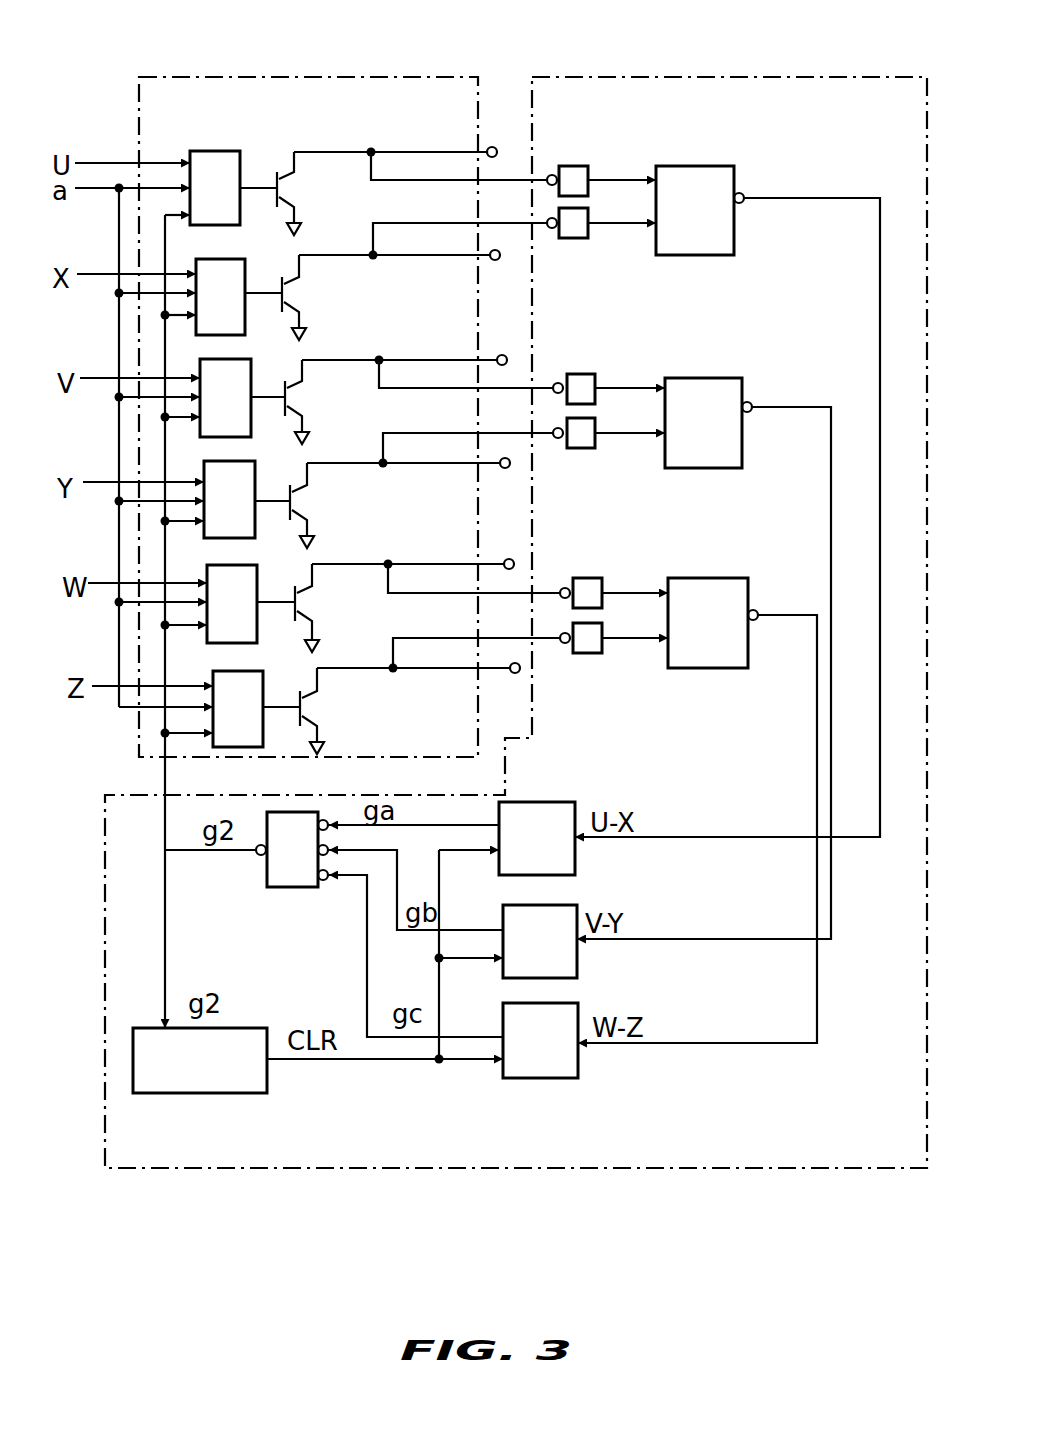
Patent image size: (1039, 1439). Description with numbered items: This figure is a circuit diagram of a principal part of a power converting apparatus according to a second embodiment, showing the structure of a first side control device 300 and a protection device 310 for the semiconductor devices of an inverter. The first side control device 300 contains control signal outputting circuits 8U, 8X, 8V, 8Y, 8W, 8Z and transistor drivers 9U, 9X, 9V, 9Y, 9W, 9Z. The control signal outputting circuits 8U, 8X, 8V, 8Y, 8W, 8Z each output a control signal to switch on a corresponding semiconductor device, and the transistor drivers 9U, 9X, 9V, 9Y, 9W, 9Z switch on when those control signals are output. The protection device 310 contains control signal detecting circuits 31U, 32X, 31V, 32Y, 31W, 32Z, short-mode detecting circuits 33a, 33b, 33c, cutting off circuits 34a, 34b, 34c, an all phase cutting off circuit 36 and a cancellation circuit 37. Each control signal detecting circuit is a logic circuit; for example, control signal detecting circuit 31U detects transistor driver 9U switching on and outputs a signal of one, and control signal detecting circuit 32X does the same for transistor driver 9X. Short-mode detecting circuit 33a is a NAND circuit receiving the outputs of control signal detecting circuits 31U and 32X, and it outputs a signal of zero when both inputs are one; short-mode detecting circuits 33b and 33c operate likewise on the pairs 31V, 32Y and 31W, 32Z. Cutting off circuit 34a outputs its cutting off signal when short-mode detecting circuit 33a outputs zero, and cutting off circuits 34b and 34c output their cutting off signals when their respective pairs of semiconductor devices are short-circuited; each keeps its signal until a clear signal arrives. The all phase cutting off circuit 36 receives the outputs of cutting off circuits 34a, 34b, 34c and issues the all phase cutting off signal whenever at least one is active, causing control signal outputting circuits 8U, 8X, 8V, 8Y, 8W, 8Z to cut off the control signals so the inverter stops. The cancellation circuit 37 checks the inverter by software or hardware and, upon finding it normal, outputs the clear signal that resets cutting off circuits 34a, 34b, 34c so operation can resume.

The first side control device 300 is at (334, 76).
The protection device 310 is at (764, 76).
The control signal outputting circuit 8U is at (233, 118).
The control signal outputting circuit 8X is at (245, 240).
The control signal outputting circuit 8V is at (228, 359).
The control signal outputting circuit 8Y is at (237, 461).
The control signal outputting circuit 8W is at (237, 565).
The control signal outputting circuit 8Z is at (230, 671).
The transistor driver 9U is at (290, 190).
The transistor driver 9X is at (300, 298).
The transistor driver 9V is at (300, 402).
The transistor driver 9Y is at (305, 506).
The transistor driver 9W is at (310, 607).
The transistor driver 9Z is at (315, 712).
The control signal detecting circuit 31U is at (567, 166).
The control signal detecting circuit 32X is at (572, 238).
The control signal detecting circuit 31V is at (577, 374).
The control signal detecting circuit 32Y is at (575, 448).
The control signal detecting circuit 31W is at (582, 578).
The control signal detecting circuit 32Z is at (590, 653).
The short-mode detecting circuit 33a is at (698, 166).
The short-mode detecting circuit 33b is at (695, 378).
The short-mode detecting circuit 33c is at (710, 578).
The cutting off circuit 34a is at (548, 802).
The cutting off circuit 34b is at (563, 905).
The cutting off circuit 34c is at (567, 1003).
The all phase cutting off circuit 36 is at (298, 887).
The cancellation circuit 37 is at (207, 1093).